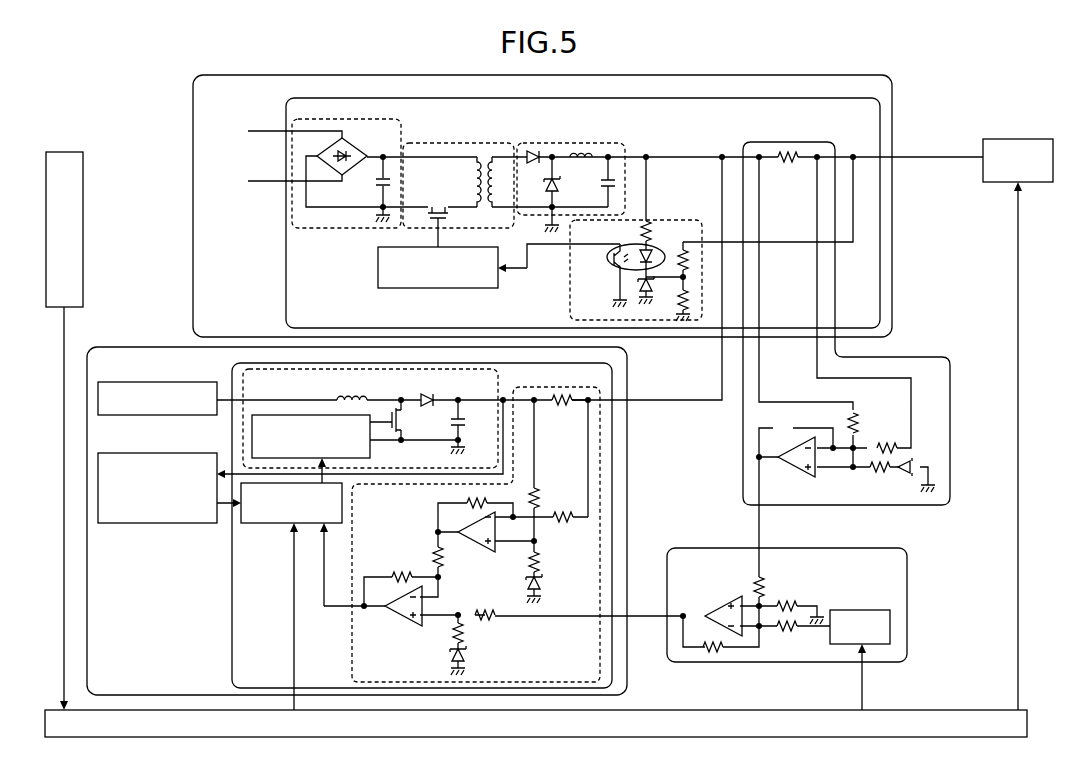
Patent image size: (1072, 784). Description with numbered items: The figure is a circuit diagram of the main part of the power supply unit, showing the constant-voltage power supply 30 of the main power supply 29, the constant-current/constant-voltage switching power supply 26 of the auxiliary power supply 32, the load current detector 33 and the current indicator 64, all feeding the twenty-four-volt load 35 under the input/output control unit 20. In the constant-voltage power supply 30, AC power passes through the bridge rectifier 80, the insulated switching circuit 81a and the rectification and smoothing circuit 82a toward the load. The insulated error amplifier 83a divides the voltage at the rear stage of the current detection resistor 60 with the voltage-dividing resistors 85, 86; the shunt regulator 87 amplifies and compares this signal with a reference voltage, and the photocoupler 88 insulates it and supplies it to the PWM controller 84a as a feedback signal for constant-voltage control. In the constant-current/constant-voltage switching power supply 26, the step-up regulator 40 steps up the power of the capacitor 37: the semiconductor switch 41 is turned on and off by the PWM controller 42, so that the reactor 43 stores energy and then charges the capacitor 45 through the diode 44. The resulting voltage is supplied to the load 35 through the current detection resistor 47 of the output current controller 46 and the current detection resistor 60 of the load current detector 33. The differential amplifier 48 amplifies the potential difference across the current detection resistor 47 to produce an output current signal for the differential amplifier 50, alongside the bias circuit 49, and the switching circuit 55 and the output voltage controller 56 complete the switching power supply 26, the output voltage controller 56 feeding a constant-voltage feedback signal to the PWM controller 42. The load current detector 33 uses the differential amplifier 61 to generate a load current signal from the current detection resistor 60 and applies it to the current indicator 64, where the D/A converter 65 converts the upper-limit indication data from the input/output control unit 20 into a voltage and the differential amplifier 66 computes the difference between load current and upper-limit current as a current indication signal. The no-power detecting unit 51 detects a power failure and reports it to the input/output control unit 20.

The input/output control unit 20 is at (644, 710).
The constant-current/constant-voltage switching power supply 26 is at (232, 583).
The main power supply 29 is at (193, 106).
The constant-voltage power supply 30 is at (286, 285).
The auxiliary power supply 32 is at (148, 332).
The load current detector 33 is at (910, 343).
The 24-V load 35 is at (1028, 139).
The capacitor 37 is at (184, 369).
The step-up regulator 40 is at (499, 373).
The semiconductor switch 41 is at (409, 422).
The PWM controller 42 is at (372, 459).
The reactor 43 is at (368, 400).
The diode 44 is at (432, 396).
The capacitor 45 is at (460, 432).
The output current controller 46 is at (352, 628).
The current detection resistor 47 is at (560, 404).
The differential amplifier 48 is at (474, 552).
The bias circuit 49 is at (465, 648).
The differential amplifier 50 is at (404, 626).
The no-power detecting unit 51 is at (71, 138).
The switching circuit 55 is at (268, 523).
The output voltage controller 56 is at (184, 439).
The current detection resistor 60 is at (786, 162).
The differential amplifier 61 is at (796, 477).
The current indicator 64 is at (864, 536).
The D/A converter 65 is at (864, 597).
The differential amplifier 66 is at (724, 596).
The bridge rectifier 80 is at (368, 108).
The insulated switching circuit 81a is at (471, 131).
The rectification and smoothing circuit 82a is at (583, 132).
The insulated error amplifier 83a is at (568, 293).
The PWM controller 84a is at (378, 267).
The voltage-dividing resistor 85 is at (682, 252).
The voltage-dividing resistor 86 is at (680, 298).
The shunt regulator 87 is at (643, 296).
The photocoupler 88 is at (610, 274).